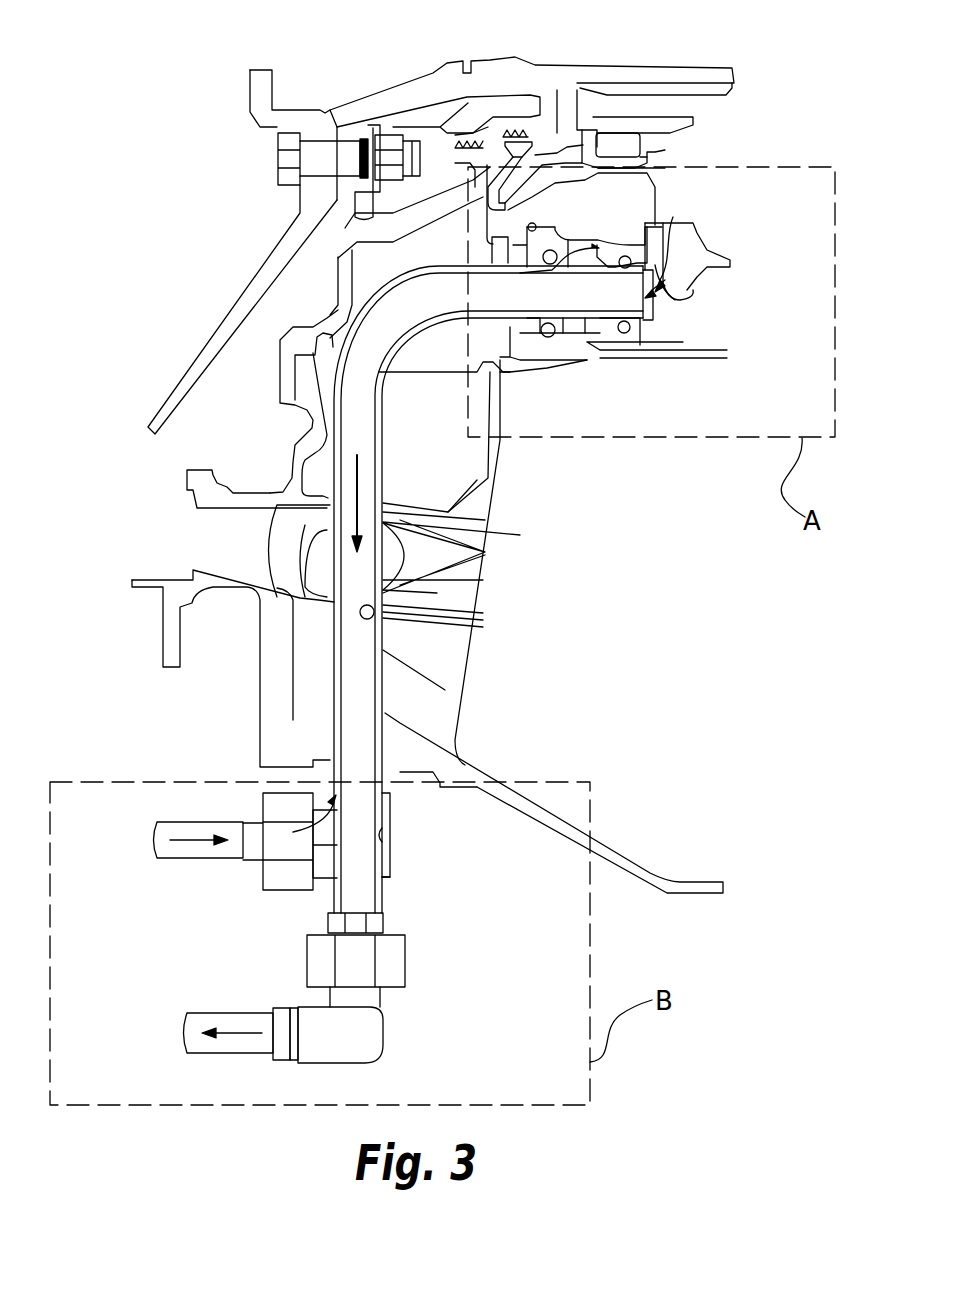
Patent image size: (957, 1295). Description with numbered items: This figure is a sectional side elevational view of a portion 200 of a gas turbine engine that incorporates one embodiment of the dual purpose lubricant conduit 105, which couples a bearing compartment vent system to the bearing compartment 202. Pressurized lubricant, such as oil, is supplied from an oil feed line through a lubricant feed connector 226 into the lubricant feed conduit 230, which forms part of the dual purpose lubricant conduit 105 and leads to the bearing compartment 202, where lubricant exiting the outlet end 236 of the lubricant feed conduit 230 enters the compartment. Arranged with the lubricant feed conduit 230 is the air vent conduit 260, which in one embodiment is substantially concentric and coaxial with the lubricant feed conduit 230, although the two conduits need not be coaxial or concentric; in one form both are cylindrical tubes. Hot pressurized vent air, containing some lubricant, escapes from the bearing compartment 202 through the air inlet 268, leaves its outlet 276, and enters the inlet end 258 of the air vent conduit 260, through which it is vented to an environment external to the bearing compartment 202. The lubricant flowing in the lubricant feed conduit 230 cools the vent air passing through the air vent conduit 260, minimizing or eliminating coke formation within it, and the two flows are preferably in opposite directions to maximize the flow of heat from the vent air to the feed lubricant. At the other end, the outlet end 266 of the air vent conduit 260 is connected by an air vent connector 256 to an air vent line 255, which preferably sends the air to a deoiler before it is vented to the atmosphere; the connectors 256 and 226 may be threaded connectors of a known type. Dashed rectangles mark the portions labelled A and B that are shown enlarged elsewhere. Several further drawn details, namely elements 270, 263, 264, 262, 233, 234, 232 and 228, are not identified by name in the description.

The portion of the gas turbine engine 200 is at (740, 45).
The bearing compartment 202 is at (710, 195).
The air inlet 268 is at (680, 215).
The seal 270 is at (693, 292).
The inlet end of air vent conduit 258 is at (645, 300).
The outlet end of lubricant conduit 236 is at (540, 330).
The outlet 276 is at (625, 345).
The air vent conduit 260 is at (395, 466).
The stator vane 263 is at (360, 583).
The seal ring 264 is at (383, 612).
The vane passage 262 is at (383, 640).
The lubricant feed conduit 230 is at (400, 688).
The dual purpose lubricant conduit 105 is at (334, 745).
The sleeve 233 is at (383, 800).
The seal groove 234 is at (385, 837).
The tube fitting 232 is at (385, 865).
The outlet end of the air vent conduit 266 is at (370, 905).
The connector 256 is at (420, 957).
The connector 226 is at (283, 895).
The inlet passage 228 is at (325, 860).
The air vent line 255 is at (200, 1013).